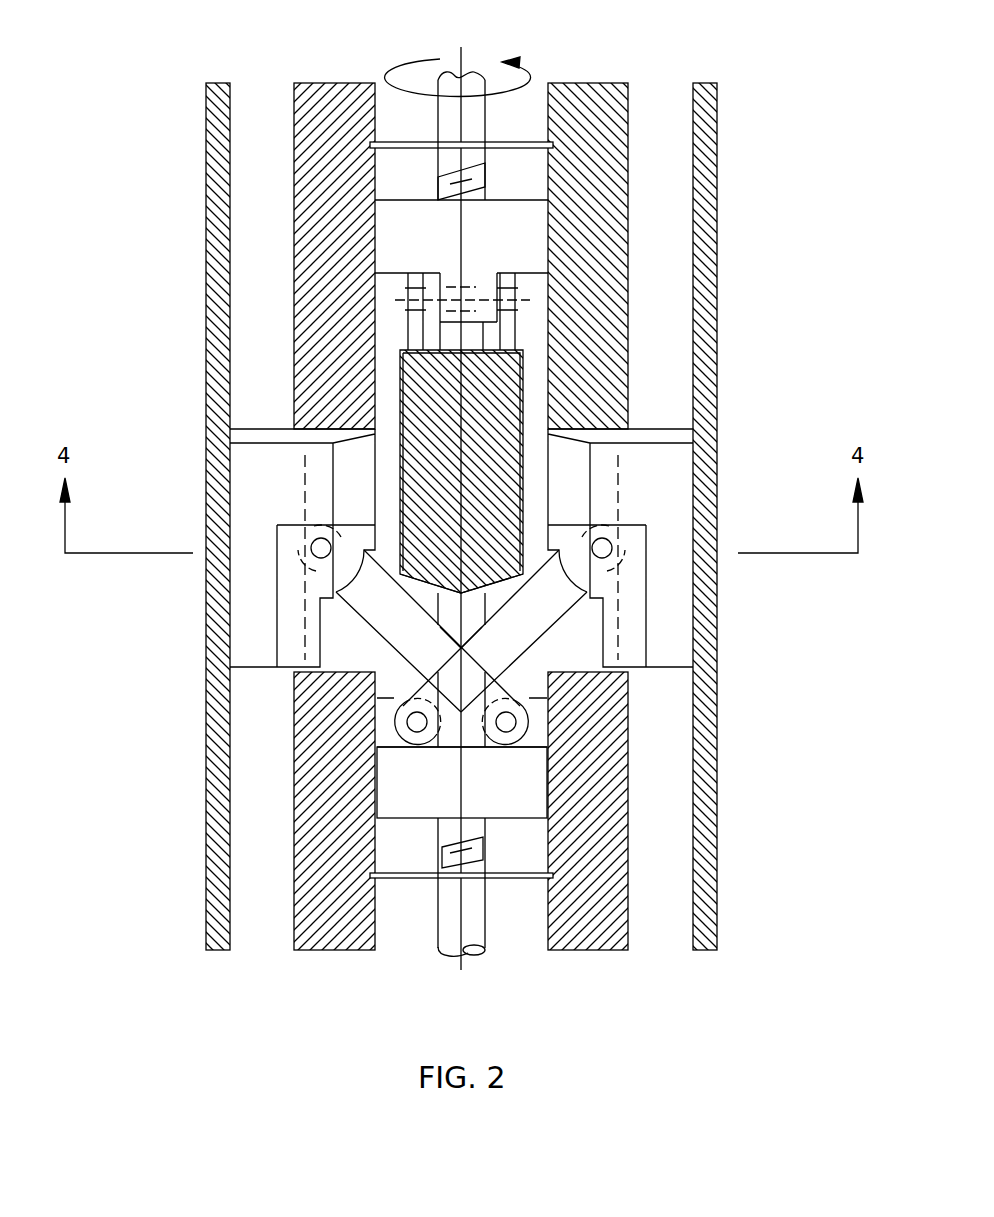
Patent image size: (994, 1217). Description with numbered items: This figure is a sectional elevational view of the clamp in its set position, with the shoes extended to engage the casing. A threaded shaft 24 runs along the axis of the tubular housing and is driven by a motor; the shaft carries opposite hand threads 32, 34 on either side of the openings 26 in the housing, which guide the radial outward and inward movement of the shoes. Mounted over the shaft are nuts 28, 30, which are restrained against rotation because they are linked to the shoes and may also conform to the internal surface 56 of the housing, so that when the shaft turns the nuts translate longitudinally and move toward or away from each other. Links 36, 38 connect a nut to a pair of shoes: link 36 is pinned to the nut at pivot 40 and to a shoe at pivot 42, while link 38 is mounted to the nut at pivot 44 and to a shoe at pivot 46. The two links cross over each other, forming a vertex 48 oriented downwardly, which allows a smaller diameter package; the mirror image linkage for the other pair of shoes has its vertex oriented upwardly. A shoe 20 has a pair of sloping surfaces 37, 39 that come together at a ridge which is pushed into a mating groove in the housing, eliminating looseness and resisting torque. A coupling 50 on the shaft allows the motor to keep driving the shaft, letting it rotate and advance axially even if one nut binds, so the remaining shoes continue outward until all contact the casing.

The shoe 20 is at (333, 443).
The shaft 24 is at (437, 168).
The openings 26 is at (593, 673).
The nut 28 is at (377, 710).
The nut 30 is at (375, 257).
The thread 32 is at (488, 847).
The thread 34 is at (485, 175).
The link 36 is at (365, 622).
The surface 37 is at (403, 586).
The link 38 is at (572, 612).
The surface 39 is at (513, 570).
The pivot 40 is at (517, 724).
The pivot 42 is at (300, 537).
The pivot 44 is at (403, 733).
The pivot 46 is at (613, 543).
The vertex 48 is at (461, 648).
The coupling 50 is at (437, 122).
The internal surface 56 is at (370, 117).